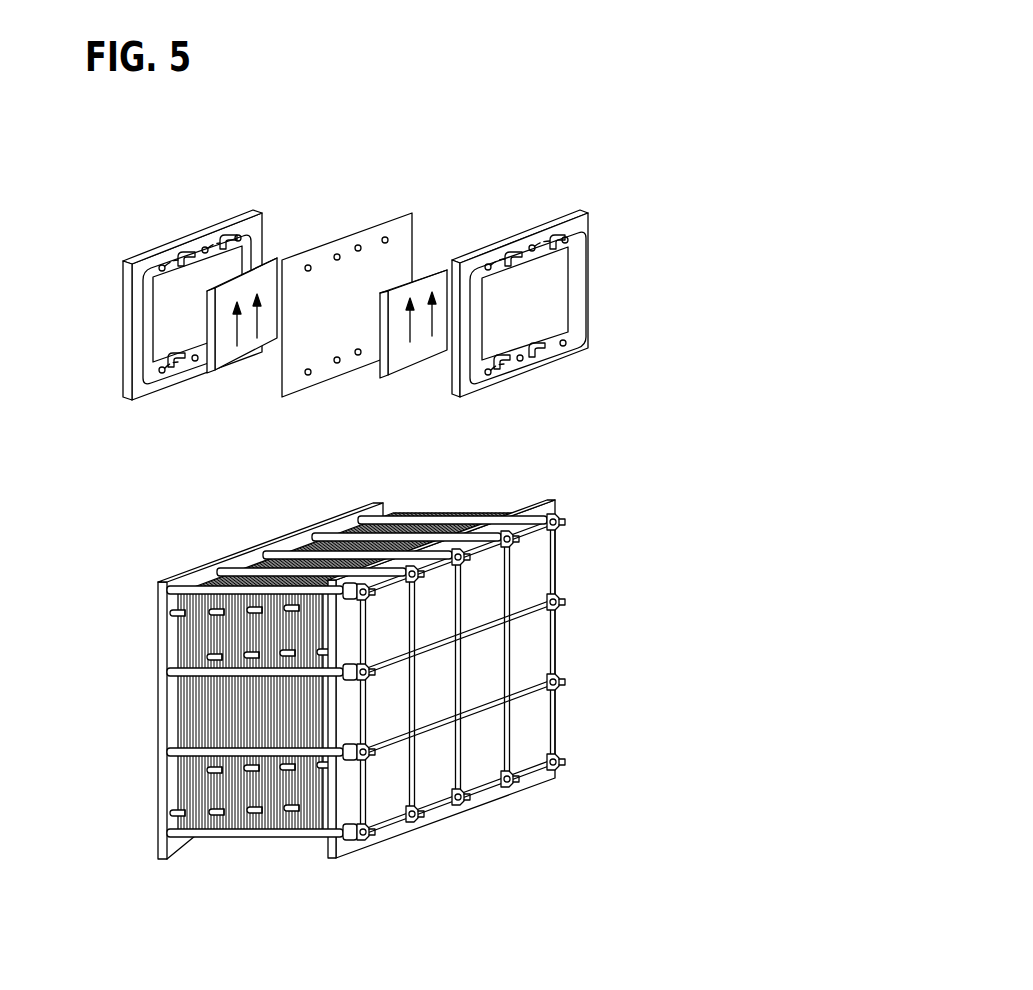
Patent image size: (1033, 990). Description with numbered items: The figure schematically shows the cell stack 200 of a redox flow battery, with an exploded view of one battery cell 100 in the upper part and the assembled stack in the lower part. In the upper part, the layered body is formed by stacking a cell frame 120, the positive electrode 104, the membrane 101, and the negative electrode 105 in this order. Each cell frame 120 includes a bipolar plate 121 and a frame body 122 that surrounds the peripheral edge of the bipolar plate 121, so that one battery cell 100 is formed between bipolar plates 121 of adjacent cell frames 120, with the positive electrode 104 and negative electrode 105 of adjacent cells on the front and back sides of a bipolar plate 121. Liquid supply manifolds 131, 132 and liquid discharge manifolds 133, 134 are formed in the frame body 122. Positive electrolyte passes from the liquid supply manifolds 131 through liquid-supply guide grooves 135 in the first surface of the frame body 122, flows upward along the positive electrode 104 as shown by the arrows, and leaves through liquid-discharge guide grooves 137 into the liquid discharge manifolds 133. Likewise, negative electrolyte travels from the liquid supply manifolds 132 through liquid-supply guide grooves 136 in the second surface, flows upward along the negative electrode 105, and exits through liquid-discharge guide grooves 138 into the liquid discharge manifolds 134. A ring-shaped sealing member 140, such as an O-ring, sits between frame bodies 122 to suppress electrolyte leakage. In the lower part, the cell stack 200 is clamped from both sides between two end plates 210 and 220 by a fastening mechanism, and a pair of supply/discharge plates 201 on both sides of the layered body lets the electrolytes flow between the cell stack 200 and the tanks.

The battery cell 100 is at (463, 333).
The membrane 101 is at (372, 225).
The positive electrode 104 is at (256, 355).
The negative electrode 105 is at (402, 365).
The cell frame 120 is at (122, 298).
The bipolar plate 121 is at (553, 280).
The frame body 122 is at (572, 324).
The liquid supply manifold 131 is at (160, 372).
The liquid supply manifold 132 is at (200, 362).
The liquid discharge manifold 133 is at (162, 264).
The liquid discharge manifold 134 is at (200, 262).
The liquid-supply guide groove 135 is at (172, 368).
The liquid-supply guide groove 136 is at (188, 368).
The liquid-discharge guide groove 137 is at (222, 246).
The liquid-discharge guide groove 138 is at (213, 245).
The ring-shaped sealing member 140 is at (254, 240).
The cell stack 200 is at (369, 711).
The supply/discharge plate 201 is at (183, 722).
The end plate 210 is at (343, 856).
The end plate 220 is at (165, 590).